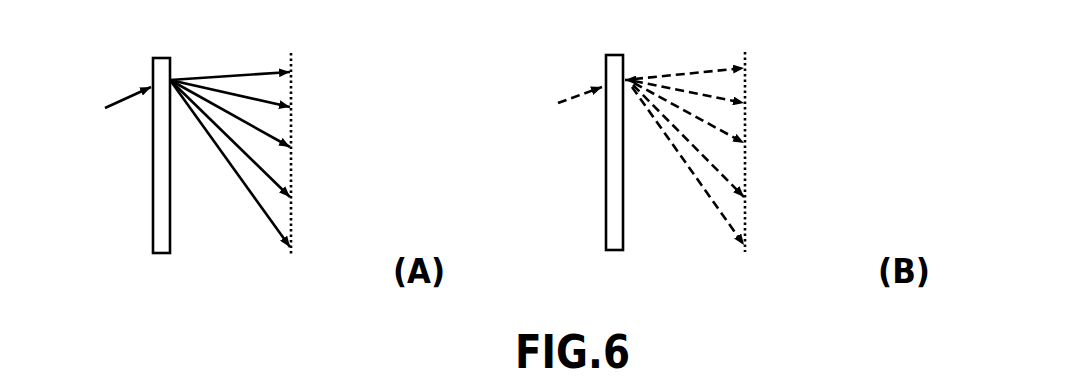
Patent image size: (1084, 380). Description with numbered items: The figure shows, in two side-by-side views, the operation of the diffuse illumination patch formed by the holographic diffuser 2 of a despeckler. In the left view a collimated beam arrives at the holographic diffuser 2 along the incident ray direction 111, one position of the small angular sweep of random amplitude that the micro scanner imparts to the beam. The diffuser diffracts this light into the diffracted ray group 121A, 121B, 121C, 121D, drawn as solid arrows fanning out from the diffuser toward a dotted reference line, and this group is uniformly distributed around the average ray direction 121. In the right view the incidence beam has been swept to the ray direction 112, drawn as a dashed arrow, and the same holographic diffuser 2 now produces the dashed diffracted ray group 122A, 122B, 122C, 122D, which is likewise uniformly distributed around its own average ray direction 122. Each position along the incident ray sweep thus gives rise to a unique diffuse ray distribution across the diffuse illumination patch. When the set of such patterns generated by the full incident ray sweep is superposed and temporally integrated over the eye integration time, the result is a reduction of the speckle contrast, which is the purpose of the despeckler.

In FIG. 6A, the holographic diffuser 2 is at (152, 222).
In FIG. 6B, the holographic diffuser 2 is at (607, 218).
In FIG. 6A, the ray direction 111 is at (130, 105).
In FIG. 6B, the ray direction 112 is at (580, 105).
In FIG. 6A, the average ray direction 121 is at (292, 155).
In FIG. 6A, the diffracted ray 121A is at (292, 70).
In FIG. 6A, the diffracted ray 121B is at (292, 110).
In FIG. 6A, the diffracted ray 121C is at (292, 203).
In FIG. 6A, the diffracted ray 121D is at (292, 250).
In FIG. 6B, the average ray direction 122 is at (746, 150).
In FIG. 6B, the diffracted ray 122A is at (746, 68).
In FIG. 6B, the diffracted ray 122B is at (746, 110).
In FIG. 6B, the diffracted ray 122C is at (746, 200).
In FIG. 6B, the diffracted ray 122D is at (746, 247).